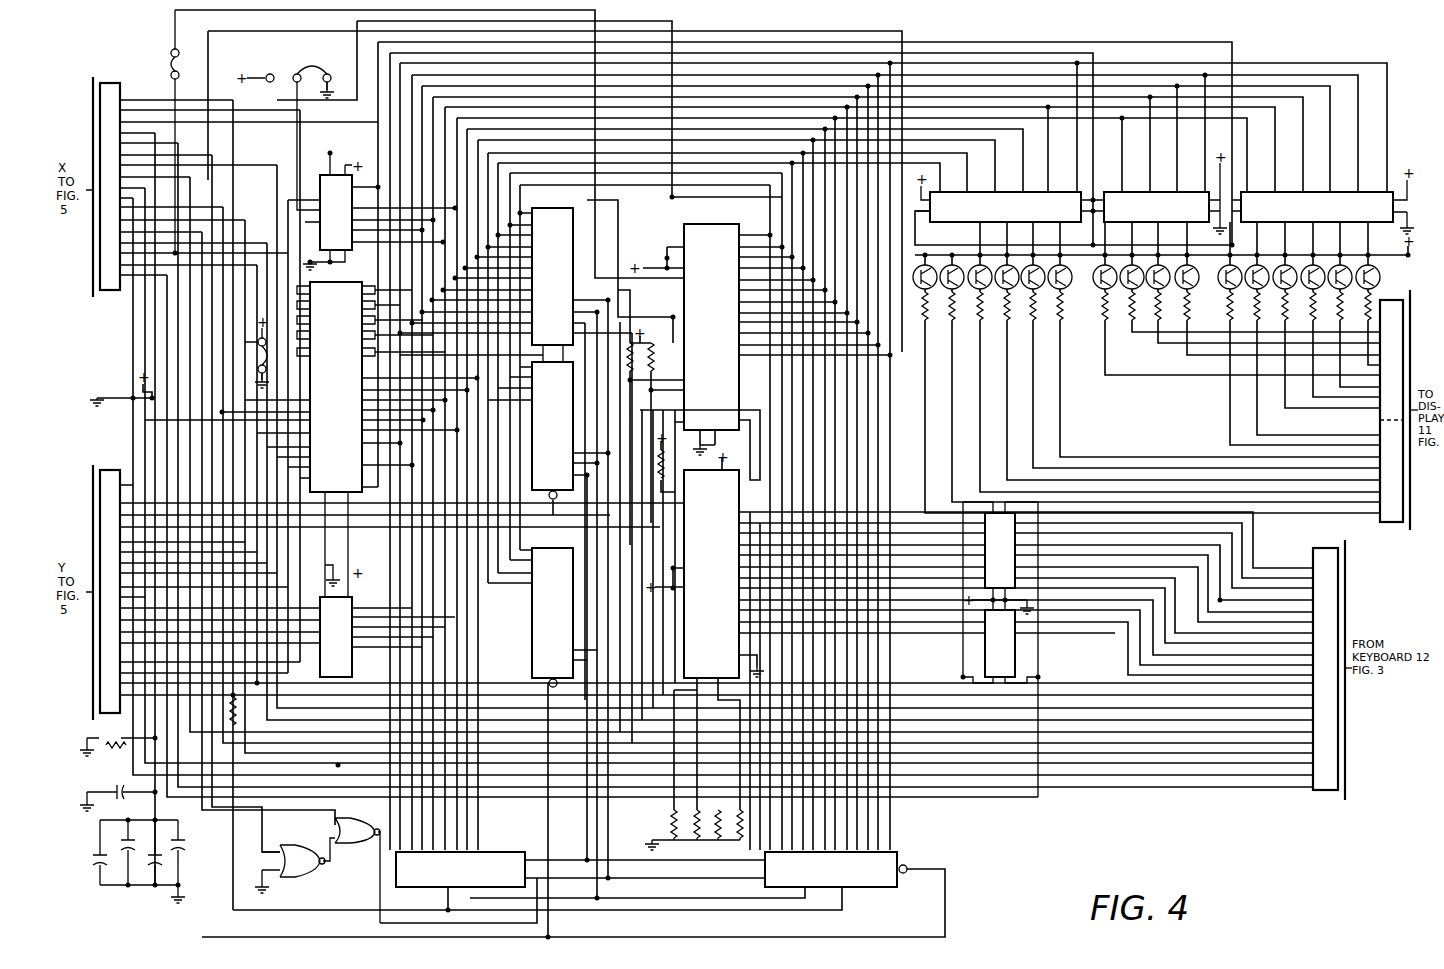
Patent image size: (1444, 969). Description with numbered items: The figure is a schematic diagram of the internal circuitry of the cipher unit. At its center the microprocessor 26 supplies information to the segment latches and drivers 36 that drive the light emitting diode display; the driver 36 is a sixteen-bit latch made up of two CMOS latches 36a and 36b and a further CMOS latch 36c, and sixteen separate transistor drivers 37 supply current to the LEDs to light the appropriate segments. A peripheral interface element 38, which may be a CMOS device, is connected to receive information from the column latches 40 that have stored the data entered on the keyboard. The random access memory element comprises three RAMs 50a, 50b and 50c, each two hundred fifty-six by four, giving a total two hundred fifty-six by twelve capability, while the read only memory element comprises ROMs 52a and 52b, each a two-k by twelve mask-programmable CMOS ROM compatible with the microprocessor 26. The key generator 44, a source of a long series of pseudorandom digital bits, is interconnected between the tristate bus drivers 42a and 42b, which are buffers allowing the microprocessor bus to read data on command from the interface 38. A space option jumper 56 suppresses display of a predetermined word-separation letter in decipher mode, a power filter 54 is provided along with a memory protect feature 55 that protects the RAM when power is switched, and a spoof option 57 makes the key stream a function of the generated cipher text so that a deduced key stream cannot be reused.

The microprocessor 26 is at (694, 250).
The segment latches and drivers 36 is at (1177, 173).
The latch 36a is at (966, 215).
The latch 36b is at (1136, 215).
The latch 36c is at (1274, 215).
The transistor drivers 37 is at (1394, 265).
The peripheral interface element 38 is at (722, 644).
The column latches 40 is at (1018, 630).
The tristate bus driver 42a is at (330, 665).
The tristate bus driver 42b is at (340, 230).
The key generator 44 is at (348, 472).
The RAM 50a is at (567, 646).
The RAM 50b is at (500, 875).
The RAM 50c is at (872, 874).
The ROM 52a is at (567, 310).
The ROM 52b is at (567, 460).
The power filter 54 is at (150, 907).
The memory protect feature 55 is at (335, 859).
The space option jumper 56 is at (304, 53).
The spoof option 57 is at (254, 318).